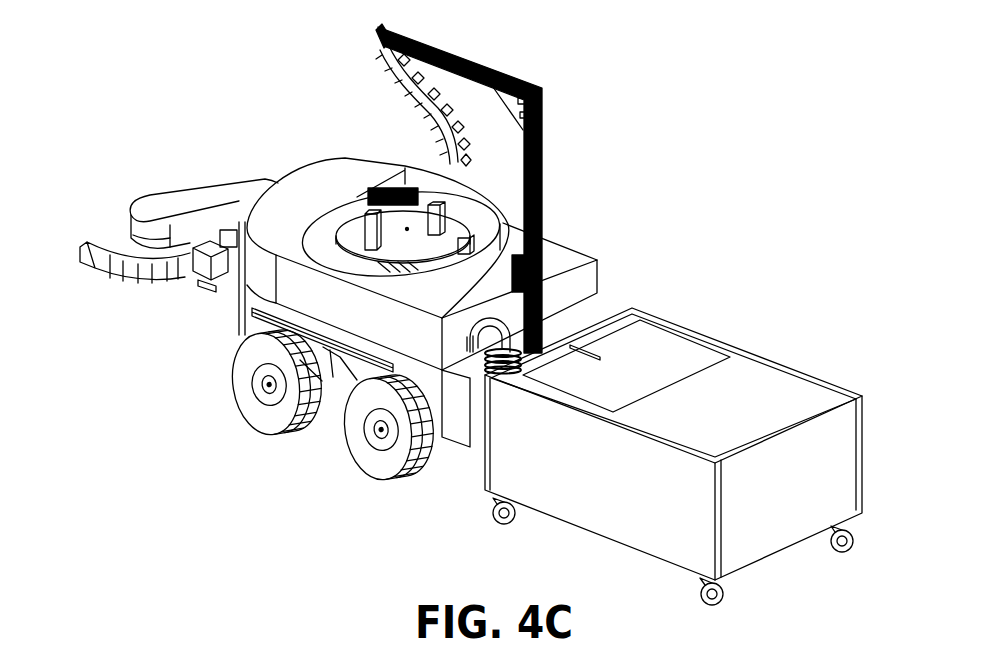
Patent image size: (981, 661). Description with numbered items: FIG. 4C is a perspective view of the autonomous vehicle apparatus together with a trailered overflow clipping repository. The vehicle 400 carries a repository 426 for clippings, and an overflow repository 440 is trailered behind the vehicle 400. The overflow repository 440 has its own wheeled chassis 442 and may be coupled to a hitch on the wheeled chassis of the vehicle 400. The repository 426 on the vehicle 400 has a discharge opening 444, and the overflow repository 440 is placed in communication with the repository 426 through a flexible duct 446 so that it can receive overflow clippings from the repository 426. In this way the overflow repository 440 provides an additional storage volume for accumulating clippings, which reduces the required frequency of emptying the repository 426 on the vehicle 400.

The vehicle 400 is at (198, 114).
The repository 426 is at (328, 183).
The overflow repository 440 is at (717, 334).
The wheeled chassis 442 is at (776, 567).
The discharge opening 444 is at (470, 340).
The flexible duct 446 is at (488, 342).